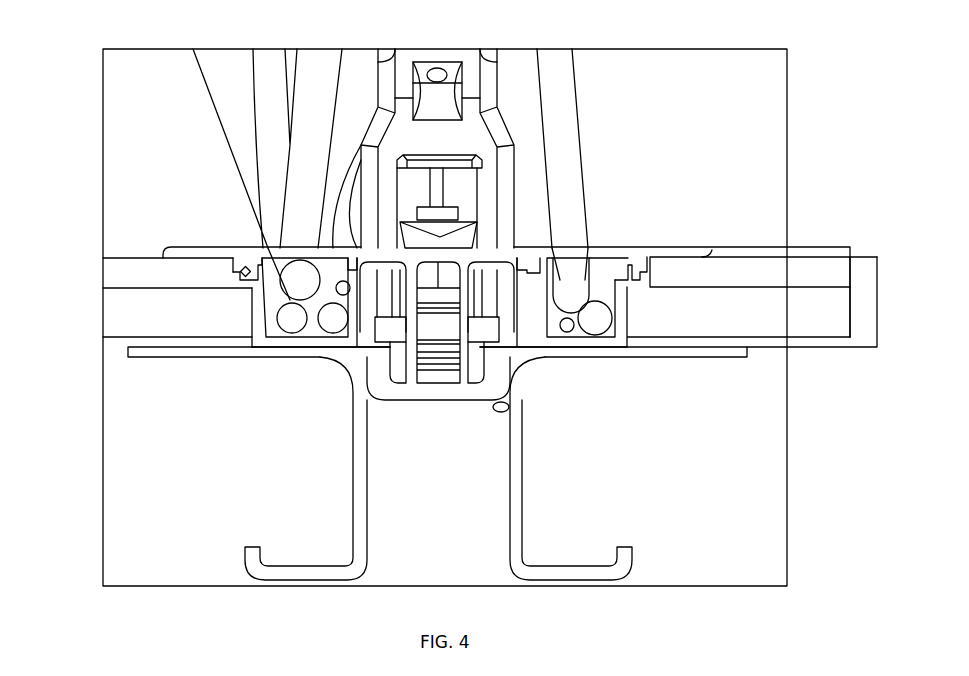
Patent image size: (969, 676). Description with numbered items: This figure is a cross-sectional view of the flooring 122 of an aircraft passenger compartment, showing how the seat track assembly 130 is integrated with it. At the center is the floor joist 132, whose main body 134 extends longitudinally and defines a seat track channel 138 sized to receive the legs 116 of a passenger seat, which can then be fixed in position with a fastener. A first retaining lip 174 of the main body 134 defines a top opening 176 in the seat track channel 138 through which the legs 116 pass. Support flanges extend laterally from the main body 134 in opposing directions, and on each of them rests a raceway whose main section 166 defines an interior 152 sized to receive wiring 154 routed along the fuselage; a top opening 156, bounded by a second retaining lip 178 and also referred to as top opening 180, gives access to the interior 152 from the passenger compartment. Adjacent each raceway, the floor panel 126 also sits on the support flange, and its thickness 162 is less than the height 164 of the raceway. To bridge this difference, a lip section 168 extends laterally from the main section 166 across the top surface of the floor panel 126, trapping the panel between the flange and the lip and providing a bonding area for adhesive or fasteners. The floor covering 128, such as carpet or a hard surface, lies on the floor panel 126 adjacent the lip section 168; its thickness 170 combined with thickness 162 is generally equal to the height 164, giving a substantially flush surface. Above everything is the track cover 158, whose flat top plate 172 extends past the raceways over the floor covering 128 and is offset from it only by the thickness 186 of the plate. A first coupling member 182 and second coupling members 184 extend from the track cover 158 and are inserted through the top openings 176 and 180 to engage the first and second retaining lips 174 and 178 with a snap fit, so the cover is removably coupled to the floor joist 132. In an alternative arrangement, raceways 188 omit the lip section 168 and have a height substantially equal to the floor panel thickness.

The legs 116 is at (488, 57).
The flooring 122 is at (78, 340).
The floor panel 126 is at (112, 311).
The floor covering 128 is at (112, 275).
The seat track assembly 130 is at (696, 210).
The floor joist 132 is at (583, 574).
The main body 134 is at (508, 382).
The seat track channel 138 is at (506, 414).
The interior 152 is at (271, 255).
The wiring 154 is at (572, 146).
The top opening 156 is at (326, 256).
The track cover 158 is at (172, 245).
The thickness 162 is at (850, 320).
The height 164 is at (872, 300).
The main section 166 is at (630, 312).
The lip section 168 is at (655, 272).
The thickness 170 is at (850, 272).
The top plate 172 is at (710, 250).
The first retaining lip 174 is at (387, 360).
The top opening 176 is at (440, 365).
The second retaining lip 178 is at (637, 265).
The top opening 180 is at (306, 256).
The first coupling member 182 is at (413, 378).
The second coupling member 184 is at (302, 335).
The thickness 186 is at (850, 250).
The raceways 188 is at (233, 262).